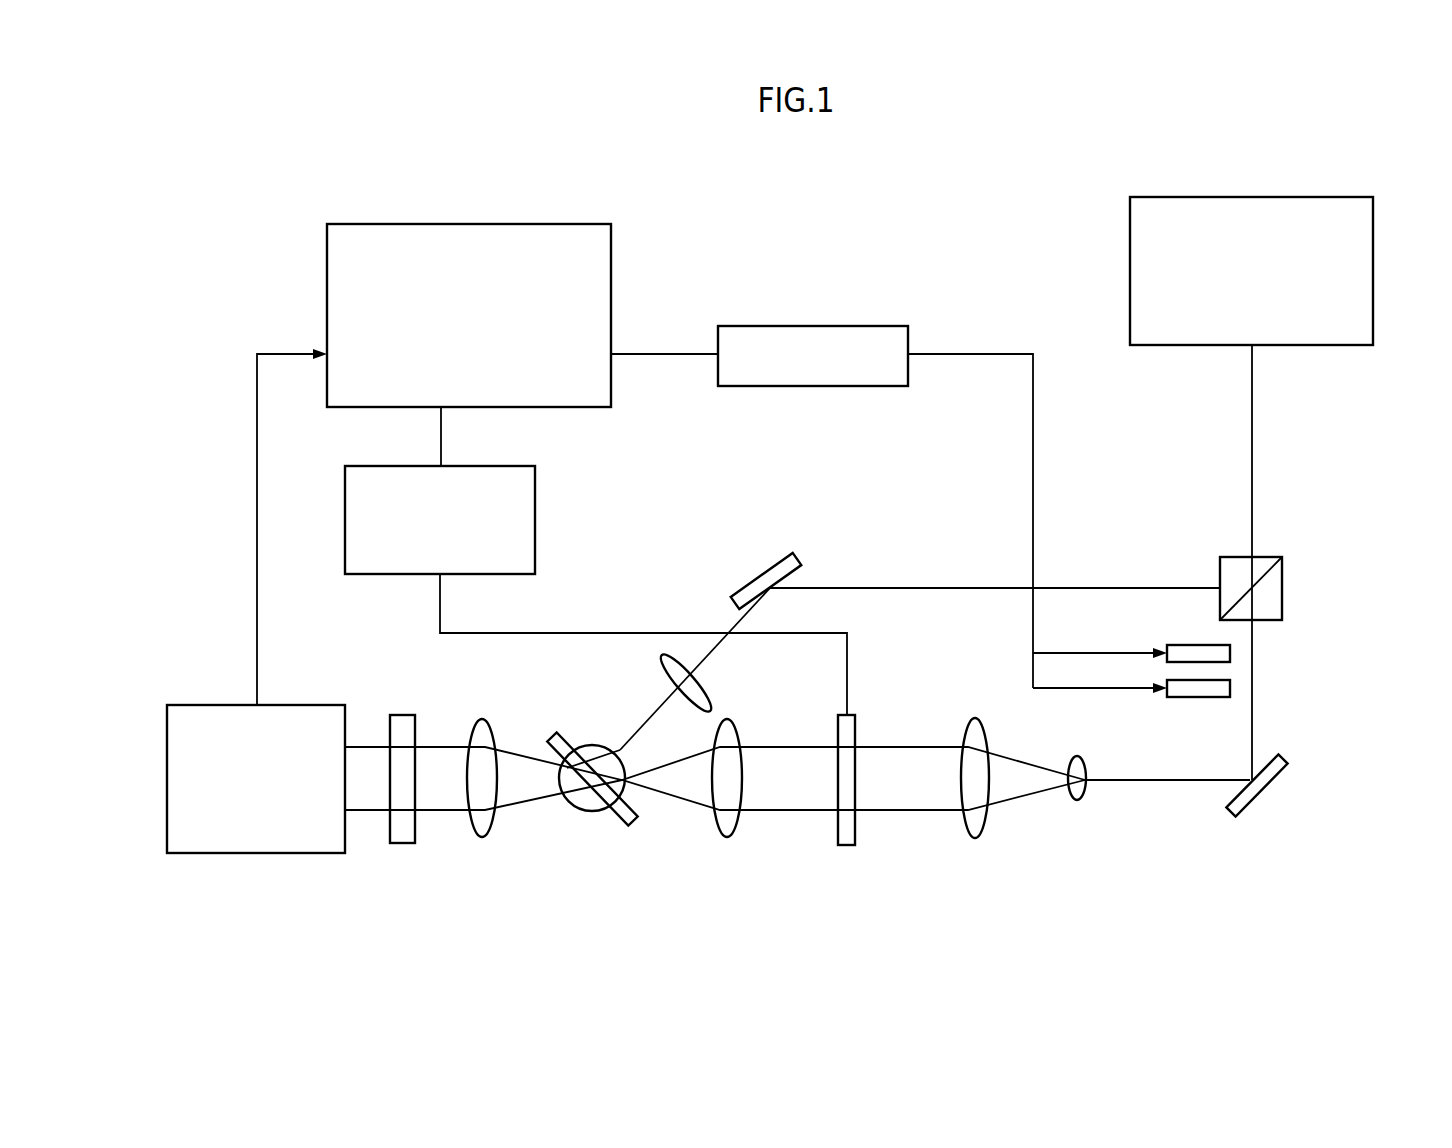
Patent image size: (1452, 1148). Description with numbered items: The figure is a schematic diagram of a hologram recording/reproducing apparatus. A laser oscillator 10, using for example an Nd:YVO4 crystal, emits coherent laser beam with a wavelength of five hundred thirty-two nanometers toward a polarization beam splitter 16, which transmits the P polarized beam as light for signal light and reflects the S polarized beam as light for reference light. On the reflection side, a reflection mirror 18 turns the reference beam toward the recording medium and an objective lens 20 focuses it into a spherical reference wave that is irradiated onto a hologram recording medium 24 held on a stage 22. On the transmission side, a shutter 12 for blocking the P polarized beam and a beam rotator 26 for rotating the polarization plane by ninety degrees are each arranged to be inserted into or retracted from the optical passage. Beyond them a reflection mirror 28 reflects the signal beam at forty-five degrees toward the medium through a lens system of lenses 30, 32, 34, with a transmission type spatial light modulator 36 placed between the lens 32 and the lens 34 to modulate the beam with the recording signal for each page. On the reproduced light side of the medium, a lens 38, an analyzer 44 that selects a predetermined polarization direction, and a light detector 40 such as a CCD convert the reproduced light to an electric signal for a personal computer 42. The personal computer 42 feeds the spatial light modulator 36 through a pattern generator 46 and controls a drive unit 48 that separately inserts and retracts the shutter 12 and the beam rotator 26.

The laser oscillator 10 is at (1373, 256).
The shutter 12 is at (1185, 645).
The polarization beam splitter 16 is at (1282, 586).
The reflection mirror 18 is at (745, 583).
The objective lens 20 is at (712, 703).
The stage 22 is at (573, 810).
The hologram recording medium 24 is at (625, 828).
The beam rotator 26 is at (1197, 697).
The reflection mirror 28 is at (1262, 796).
The lens 30 is at (1077, 800).
The lens 32 is at (975, 838).
The lens 34 is at (727, 840).
The spatial light modulator 36 is at (845, 848).
The lens 38 is at (481, 840).
The light detector 40 is at (248, 845).
The personal computer 42 is at (452, 224).
The analyzer 44 is at (400, 845).
The pattern generator 46 is at (390, 574).
The drive unit 48 is at (875, 326).